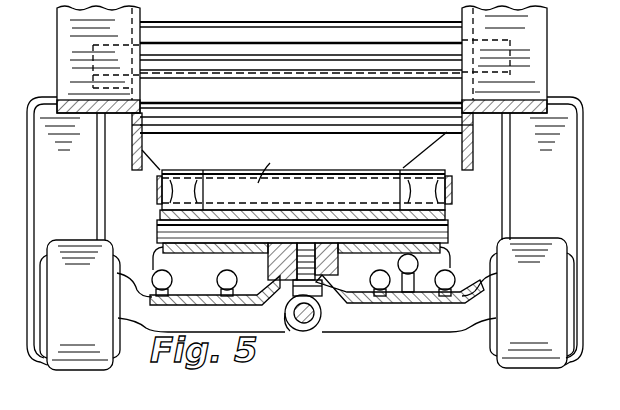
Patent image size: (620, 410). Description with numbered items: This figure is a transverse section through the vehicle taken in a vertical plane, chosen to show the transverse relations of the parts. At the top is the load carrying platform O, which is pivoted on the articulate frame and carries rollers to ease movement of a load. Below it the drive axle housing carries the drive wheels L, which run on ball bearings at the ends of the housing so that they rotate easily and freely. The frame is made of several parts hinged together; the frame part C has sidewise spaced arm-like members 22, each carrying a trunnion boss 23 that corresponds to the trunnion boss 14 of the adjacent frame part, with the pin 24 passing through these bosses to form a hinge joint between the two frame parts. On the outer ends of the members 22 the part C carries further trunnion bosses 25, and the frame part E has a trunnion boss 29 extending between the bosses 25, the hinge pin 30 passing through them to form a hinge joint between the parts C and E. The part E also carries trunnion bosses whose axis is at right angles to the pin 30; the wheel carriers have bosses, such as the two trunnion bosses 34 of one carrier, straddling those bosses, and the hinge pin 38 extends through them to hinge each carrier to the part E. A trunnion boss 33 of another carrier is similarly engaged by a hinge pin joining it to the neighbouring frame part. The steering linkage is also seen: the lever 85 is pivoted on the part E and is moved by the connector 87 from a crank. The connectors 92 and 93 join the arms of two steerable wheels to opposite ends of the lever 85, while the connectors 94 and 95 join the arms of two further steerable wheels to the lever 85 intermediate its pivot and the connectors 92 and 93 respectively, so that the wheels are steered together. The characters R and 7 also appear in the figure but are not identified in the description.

The trunnion boss 33 is at (428, 22).
The load carrying platform O is at (62, 38).
The drive wheels L is at (305, 231).
The wheel 7 is at (307, 304).
The trunnion boss 14 is at (331, 188).
The roller surface R is at (260, 164).
The arm-like members 22 is at (294, 151).
The trunnion boss 23 is at (167, 137).
The pin 24 is at (452, 183).
The frame part C is at (472, 203).
The trunnion bosses 25 is at (165, 246).
The hinge pin 30 is at (448, 226).
The trunnion boss 29 is at (237, 247).
The hinge pin 38 is at (314, 312).
The trunnion bosses 34 is at (311, 329).
The connector 92 is at (192, 305).
The lever 85 is at (420, 297).
The connector 94 is at (228, 280).
The connector 95 is at (390, 297).
The connector 87 is at (411, 263).
The connector 93 is at (453, 275).
The frame part E is at (352, 268).